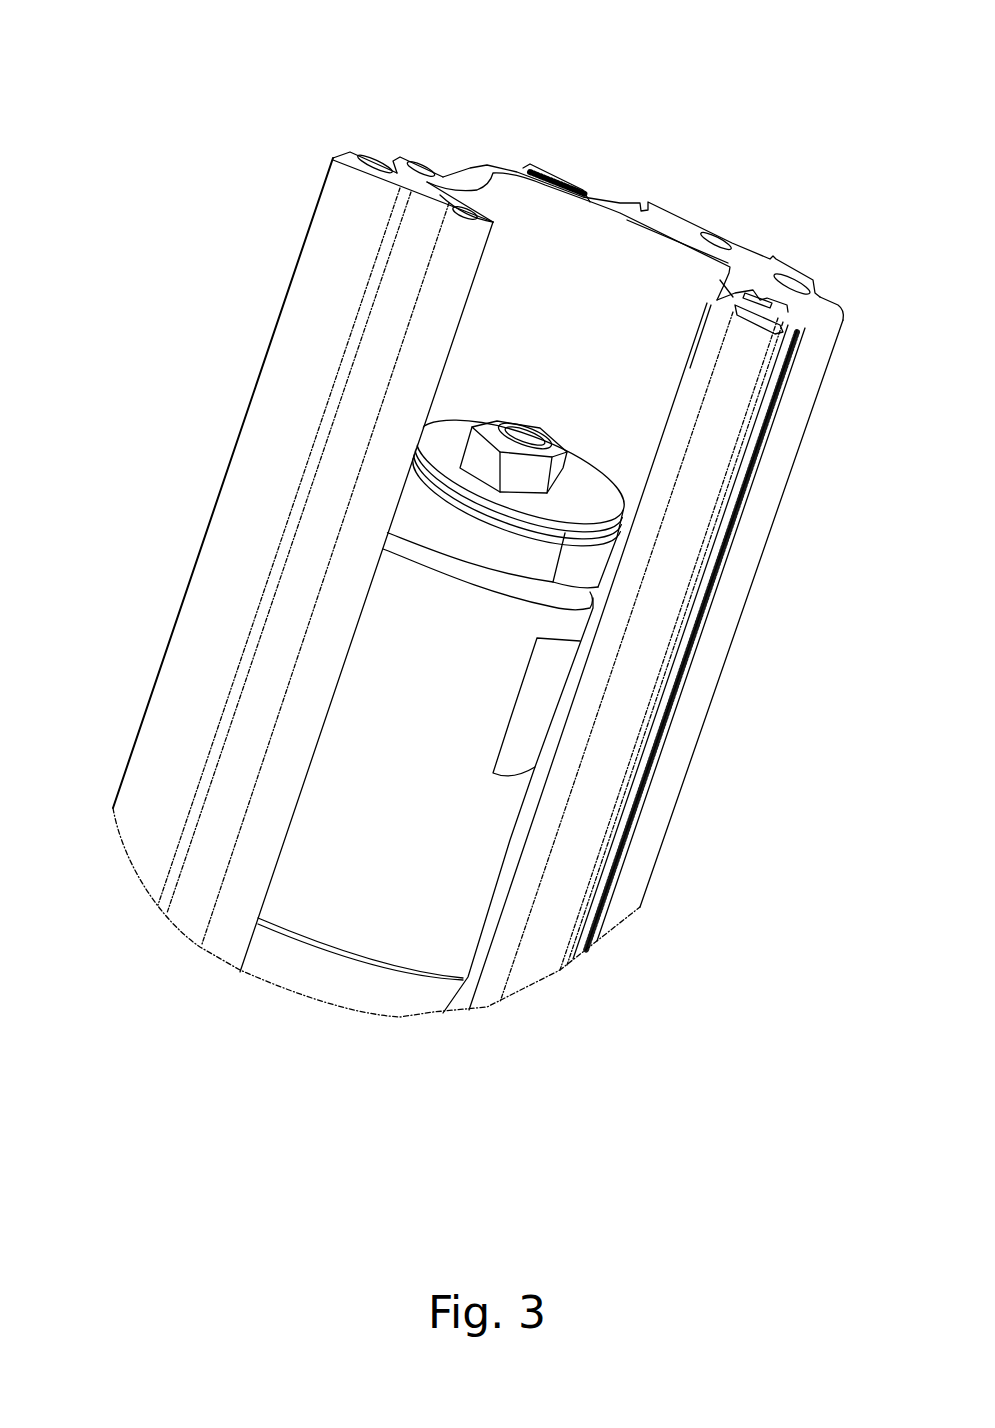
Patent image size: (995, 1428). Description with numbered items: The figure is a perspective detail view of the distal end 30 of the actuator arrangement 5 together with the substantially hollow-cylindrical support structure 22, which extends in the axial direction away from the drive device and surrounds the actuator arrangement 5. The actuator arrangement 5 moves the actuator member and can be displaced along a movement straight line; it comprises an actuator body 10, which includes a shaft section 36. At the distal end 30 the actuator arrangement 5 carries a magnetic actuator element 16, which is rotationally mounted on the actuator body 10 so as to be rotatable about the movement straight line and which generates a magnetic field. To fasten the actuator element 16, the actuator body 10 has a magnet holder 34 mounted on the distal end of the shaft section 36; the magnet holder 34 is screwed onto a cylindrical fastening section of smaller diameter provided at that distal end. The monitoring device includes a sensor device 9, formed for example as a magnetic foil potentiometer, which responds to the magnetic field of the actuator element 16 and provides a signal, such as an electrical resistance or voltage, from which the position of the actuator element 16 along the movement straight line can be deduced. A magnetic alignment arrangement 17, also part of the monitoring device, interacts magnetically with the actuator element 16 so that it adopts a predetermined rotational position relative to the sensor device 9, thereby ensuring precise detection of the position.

The distal end 30 is at (231, 142).
The magnet holder 34 is at (325, 795).
The shaft section 36 is at (283, 968).
The support structure 22 is at (733, 590).
The sensor device 9 is at (730, 258).
The magnetic alignment arrangement 17 is at (468, 207).
The actuator body 10 is at (365, 684).
The magnetic actuator element 16 is at (420, 518).
The actuator arrangement 5 is at (598, 437).